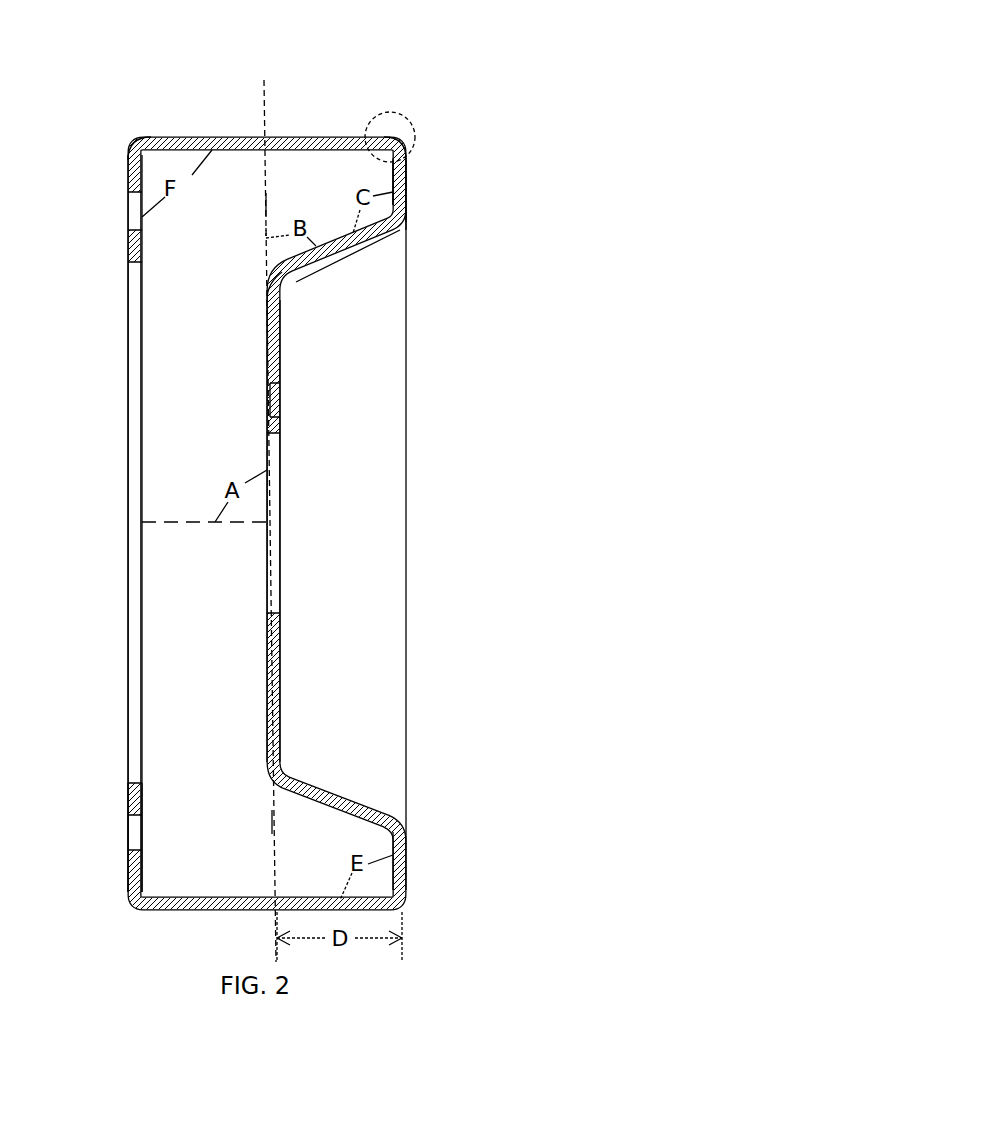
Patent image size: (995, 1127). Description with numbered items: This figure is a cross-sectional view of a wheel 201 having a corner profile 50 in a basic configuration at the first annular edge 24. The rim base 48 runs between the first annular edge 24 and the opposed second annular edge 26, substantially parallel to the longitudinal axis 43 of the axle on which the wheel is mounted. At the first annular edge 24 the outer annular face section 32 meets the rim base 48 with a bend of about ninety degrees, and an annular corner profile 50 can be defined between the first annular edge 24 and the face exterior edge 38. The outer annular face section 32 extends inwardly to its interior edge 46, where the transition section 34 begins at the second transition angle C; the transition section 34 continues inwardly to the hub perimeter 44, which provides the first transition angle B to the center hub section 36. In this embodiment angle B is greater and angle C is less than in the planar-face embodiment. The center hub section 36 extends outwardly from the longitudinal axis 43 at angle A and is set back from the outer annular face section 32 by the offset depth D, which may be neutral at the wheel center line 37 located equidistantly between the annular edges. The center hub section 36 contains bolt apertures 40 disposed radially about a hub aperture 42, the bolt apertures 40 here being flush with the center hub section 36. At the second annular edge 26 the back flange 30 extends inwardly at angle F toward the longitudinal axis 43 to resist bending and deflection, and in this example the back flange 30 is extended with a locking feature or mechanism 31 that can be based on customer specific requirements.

The wheel 201 is at (549, 84).
The first annular edge 24 is at (363, 112).
The second annular edge 26 is at (131, 140).
The back flange 30 is at (125, 164).
The locking feature or mechanism 31 is at (128, 840).
The outer annular face section 32 is at (393, 197).
The transition section 34 is at (330, 253).
The center hub section 36 is at (282, 322).
The wheel center line 37 is at (265, 205).
The face exterior edge 38 is at (410, 167).
The bolt apertures 40 is at (281, 392).
The hub aperture 42 is at (281, 474).
The longitudinal axis 43 is at (280, 522).
The hub perimeter 44 is at (268, 287).
The interior edge 46 is at (405, 218).
The rim base 48 is at (165, 950).
The corner profile 50 is at (420, 119).